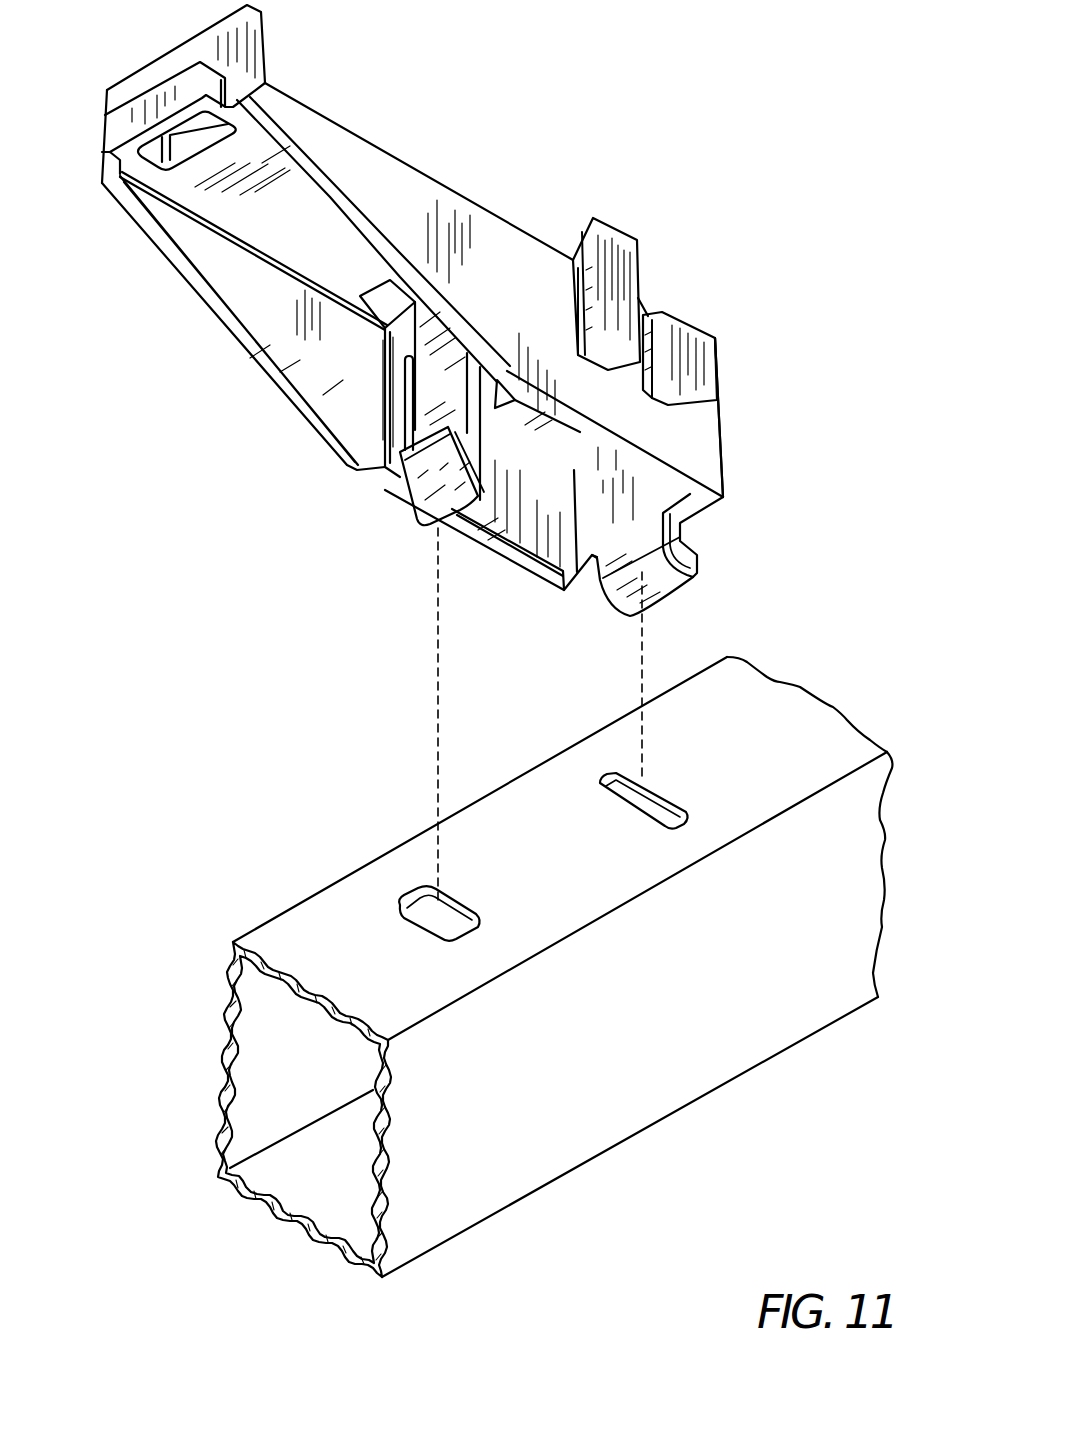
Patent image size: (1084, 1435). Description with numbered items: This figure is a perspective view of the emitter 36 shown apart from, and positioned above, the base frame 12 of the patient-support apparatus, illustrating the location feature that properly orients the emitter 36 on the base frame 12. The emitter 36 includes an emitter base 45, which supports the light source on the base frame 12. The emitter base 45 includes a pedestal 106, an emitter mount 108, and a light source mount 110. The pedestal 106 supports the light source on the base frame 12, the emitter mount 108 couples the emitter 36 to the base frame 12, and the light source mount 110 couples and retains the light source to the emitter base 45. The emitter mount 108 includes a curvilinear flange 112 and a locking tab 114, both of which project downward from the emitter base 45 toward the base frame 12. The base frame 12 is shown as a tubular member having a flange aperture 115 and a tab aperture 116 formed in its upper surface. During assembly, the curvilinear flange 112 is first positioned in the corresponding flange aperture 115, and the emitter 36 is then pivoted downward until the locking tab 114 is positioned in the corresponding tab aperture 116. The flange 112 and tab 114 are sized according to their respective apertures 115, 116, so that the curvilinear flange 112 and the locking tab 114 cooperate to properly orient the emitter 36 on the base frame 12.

The emitter 36 is at (601, 92).
The light source mount 110 is at (620, 226).
The pedestal 106 is at (688, 370).
The emitter base 45 is at (730, 419).
The locking tab 114 is at (444, 527).
The curvilinear flange 112 is at (665, 598).
The emitter mount 108 is at (699, 587).
The base frame 12 is at (825, 745).
The flange aperture 115 is at (663, 797).
The tab aperture 116 is at (466, 912).